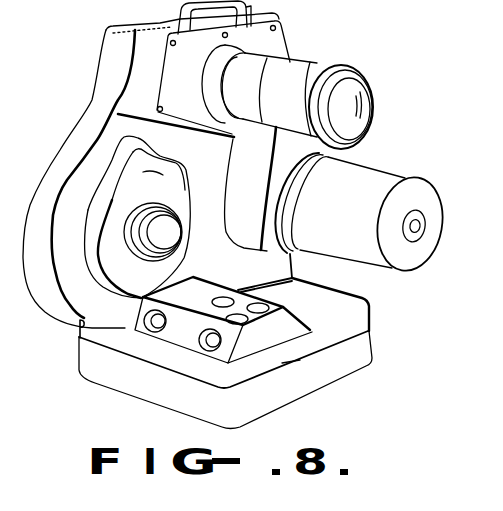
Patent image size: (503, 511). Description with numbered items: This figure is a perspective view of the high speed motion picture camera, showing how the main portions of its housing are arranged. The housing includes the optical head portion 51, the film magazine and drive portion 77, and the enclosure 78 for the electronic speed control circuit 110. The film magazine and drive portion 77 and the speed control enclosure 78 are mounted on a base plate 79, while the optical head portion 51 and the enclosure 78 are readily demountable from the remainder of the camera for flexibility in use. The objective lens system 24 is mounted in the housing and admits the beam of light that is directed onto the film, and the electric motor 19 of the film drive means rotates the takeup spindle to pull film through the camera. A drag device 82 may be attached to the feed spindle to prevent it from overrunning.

The electric motor 19 is at (397, 168).
The objective lens system 24 is at (322, 64).
The optical head portion 51 is at (278, 44).
The film magazine and drive portion 77 is at (76, 127).
The enclosure 78 is at (250, 338).
The base plate 79 is at (170, 363).
The drag device 82 is at (101, 278).
The electronic speed control circuit 110 is at (290, 333).